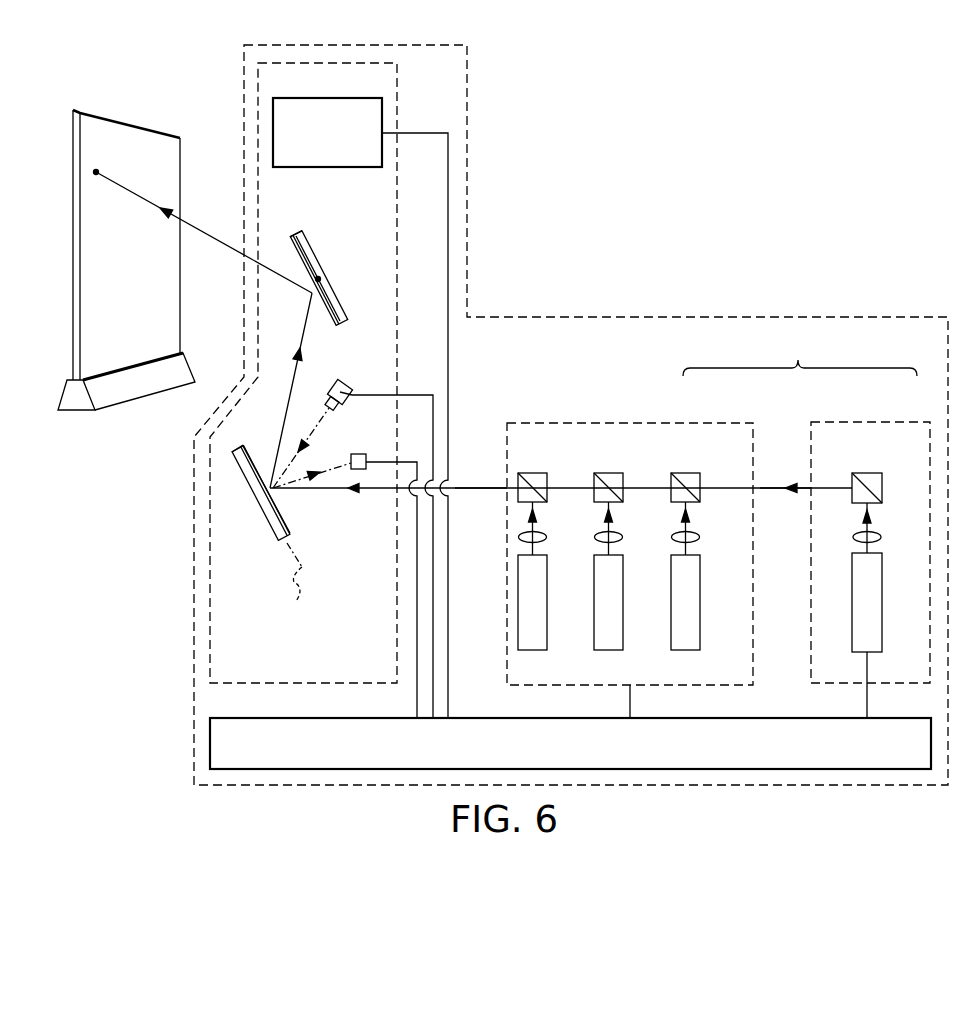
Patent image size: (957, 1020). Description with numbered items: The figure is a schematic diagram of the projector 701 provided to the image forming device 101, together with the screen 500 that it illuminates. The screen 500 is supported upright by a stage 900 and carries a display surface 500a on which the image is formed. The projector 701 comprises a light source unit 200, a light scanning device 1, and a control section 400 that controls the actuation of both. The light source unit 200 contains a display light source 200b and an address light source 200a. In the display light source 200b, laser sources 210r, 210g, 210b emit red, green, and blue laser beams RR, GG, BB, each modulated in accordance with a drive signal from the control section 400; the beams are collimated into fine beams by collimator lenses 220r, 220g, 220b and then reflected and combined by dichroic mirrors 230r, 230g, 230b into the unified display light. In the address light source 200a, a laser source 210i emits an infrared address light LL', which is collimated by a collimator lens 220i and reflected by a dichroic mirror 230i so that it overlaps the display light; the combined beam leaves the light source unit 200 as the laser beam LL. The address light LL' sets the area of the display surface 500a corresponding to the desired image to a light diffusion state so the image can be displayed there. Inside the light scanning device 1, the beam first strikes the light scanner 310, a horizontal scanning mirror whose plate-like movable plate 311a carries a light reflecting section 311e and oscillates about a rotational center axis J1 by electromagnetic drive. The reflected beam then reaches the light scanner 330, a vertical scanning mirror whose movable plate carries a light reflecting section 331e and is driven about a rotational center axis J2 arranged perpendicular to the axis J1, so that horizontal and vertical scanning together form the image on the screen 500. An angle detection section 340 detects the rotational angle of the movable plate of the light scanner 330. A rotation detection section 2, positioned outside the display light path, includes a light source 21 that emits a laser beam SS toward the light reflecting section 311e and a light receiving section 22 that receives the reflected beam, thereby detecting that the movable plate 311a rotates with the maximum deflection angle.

The image forming device 101 is at (716, 158).
The projector 701 is at (858, 316).
The light scanning device 1 is at (401, 99).
The angle detection section 340 is at (327, 98).
The screen 500 is at (147, 128).
The display surface 500a is at (130, 352).
The stage 900 is at (73, 410).
The laser beam LL is at (203, 329).
The light scanner 330 is at (329, 268).
The light reflecting section 331e is at (291, 252).
The rotational center axis J2 is at (324, 281).
The light scanner 310 is at (263, 526).
The movable plate 311a is at (253, 478).
The light reflecting section 311e is at (264, 450).
The rotational center axis J1 is at (296, 582).
The rotation detection section 2 is at (350, 380).
The light source 21 is at (336, 386).
The laser beam SS is at (313, 422).
The light receiving section 22 is at (360, 453).
The address light LL' is at (785, 478).
The light source unit 200 is at (718, 526).
The display light source 200b is at (715, 420).
The address light source 200a is at (892, 420).
The dichroic mirror 230r is at (537, 472).
The dichroic mirror 230g is at (613, 472).
The dichroic mirror 230b is at (690, 472).
The dichroic mirror 230i is at (871, 472).
The collimator lens 220r is at (545, 534).
The collimator lens 220g is at (621, 534).
The collimator lens 220b is at (698, 534).
The collimator lens 220i is at (880, 534).
The laser source 210r is at (537, 651).
The laser source 210g is at (613, 651).
The laser source 210b is at (690, 651).
The laser source 210i is at (874, 652).
The laser beam RR is at (546, 548).
The laser beam GG is at (622, 548).
The laser beam BB is at (699, 548).
The control section 400 is at (790, 718).